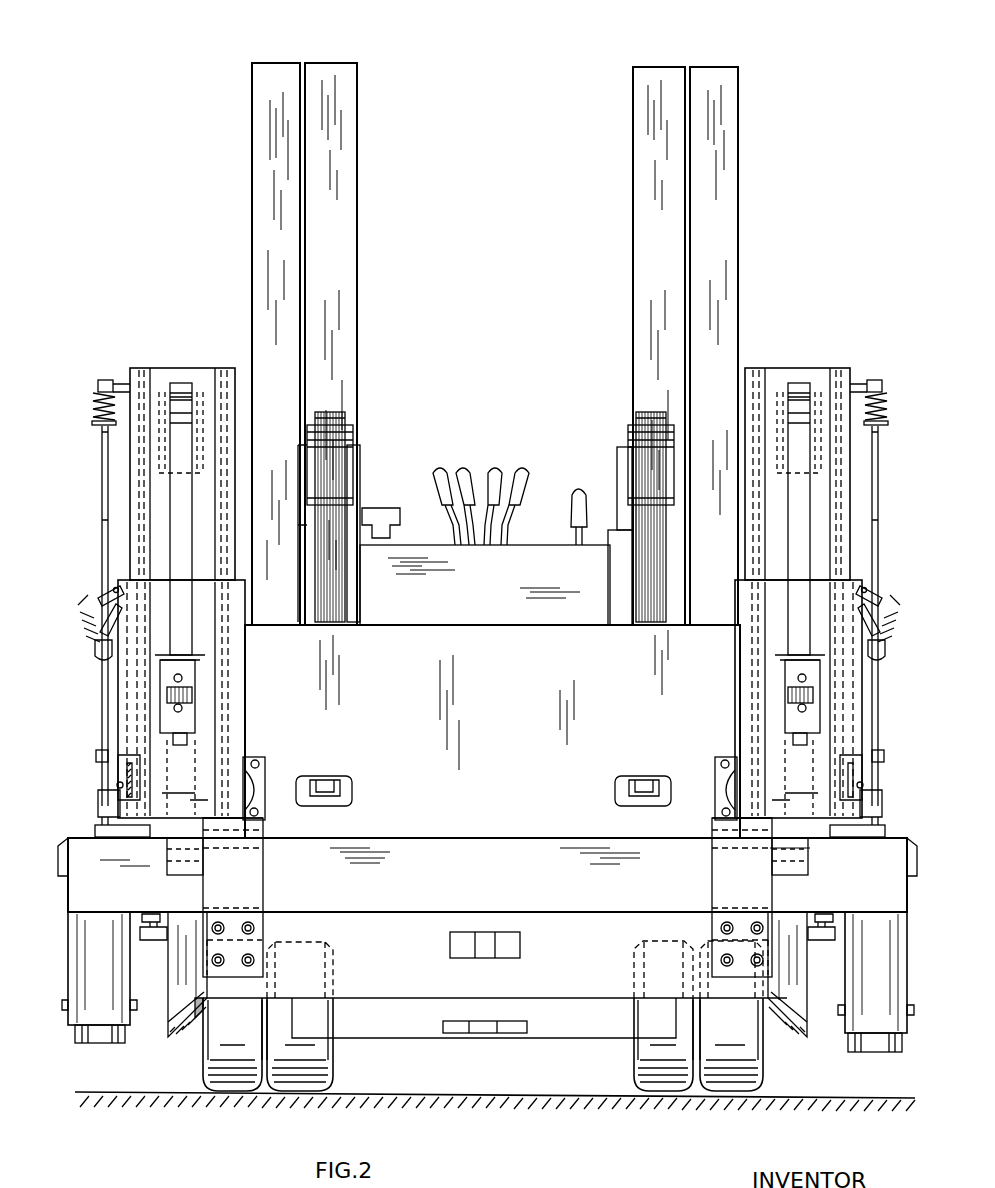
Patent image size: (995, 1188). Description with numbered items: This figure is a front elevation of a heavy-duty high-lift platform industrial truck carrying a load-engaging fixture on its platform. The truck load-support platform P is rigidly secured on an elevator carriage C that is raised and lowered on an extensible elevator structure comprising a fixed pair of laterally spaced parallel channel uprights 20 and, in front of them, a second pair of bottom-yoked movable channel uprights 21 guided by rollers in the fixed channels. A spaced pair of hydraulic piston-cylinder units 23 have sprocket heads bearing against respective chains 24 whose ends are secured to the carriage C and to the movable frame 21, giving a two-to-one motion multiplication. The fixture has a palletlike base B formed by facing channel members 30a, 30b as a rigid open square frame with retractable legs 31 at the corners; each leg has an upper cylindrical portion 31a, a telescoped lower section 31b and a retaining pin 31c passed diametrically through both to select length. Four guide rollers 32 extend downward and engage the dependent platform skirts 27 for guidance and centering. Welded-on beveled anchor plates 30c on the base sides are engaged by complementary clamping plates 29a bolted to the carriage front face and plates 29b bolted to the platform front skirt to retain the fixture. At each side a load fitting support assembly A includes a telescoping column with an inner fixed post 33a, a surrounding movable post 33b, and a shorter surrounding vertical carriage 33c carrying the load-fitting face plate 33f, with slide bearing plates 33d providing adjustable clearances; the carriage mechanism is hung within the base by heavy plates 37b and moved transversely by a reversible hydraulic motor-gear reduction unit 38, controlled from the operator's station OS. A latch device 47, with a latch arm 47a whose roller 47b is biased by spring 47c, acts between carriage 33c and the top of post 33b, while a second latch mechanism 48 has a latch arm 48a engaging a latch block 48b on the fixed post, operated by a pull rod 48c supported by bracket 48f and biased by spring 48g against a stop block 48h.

The fixed channel uprights 20 is at (330, 63).
The movable channel uprights 21 is at (272, 112).
The hydraulic piston-cylinder units 23 is at (352, 524).
The chain 24 is at (345, 416).
The platform skirts 27 is at (166, 976).
The clamping plates 29a is at (254, 902).
The clamping plates 29b is at (280, 808).
The channel members 30a is at (60, 902).
The transverse channel members 30b is at (492, 886).
The anchor plates 30c is at (68, 858).
The retractable legs 31 is at (483, 1002).
The upper cylindrical leg portion 31a is at (100, 998).
The lower leg section 31b is at (103, 1046).
The retaining pin 31c is at (62, 1006).
The guide rollers 32 is at (168, 896).
The fixed post 33a is at (166, 396).
The movable post 33b is at (205, 378).
The vertical carriage 33c is at (118, 728).
The slide bearing plates 33d is at (142, 368).
The vertical face plate 33f is at (246, 680).
The support plates 37b is at (306, 836).
The hydraulic motor-gear reduction unit 38 is at (258, 757).
The latch device 47 is at (487, 620).
The latch arm 47a is at (104, 680).
The roller 47b is at (90, 598).
The spring 47c is at (476, 625).
The latch mechanism 48 is at (492, 609).
The latch arm 48a is at (120, 814).
The latch block 48b is at (112, 836).
The pull rod 48c is at (881, 512).
The bracket 48f is at (860, 390).
The spring 48g is at (886, 392).
The stop block 48h is at (883, 432).
The load fitting support assemblies A is at (286, 778).
The palletlike base B is at (487, 836).
The elevator carriage C is at (496, 700).
The operator's station OS is at (510, 452).
The load-support platform P is at (404, 962).